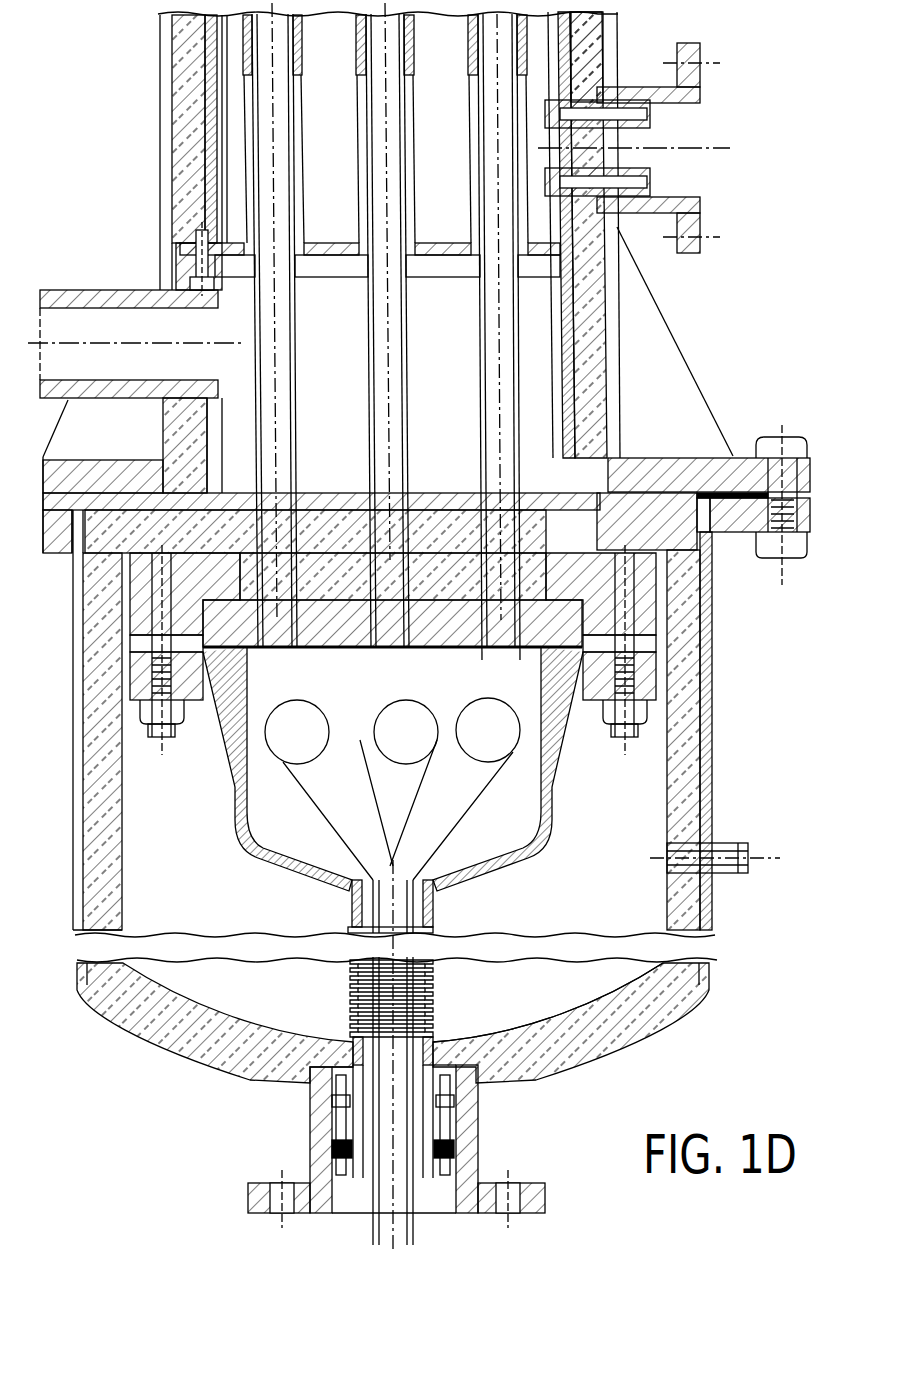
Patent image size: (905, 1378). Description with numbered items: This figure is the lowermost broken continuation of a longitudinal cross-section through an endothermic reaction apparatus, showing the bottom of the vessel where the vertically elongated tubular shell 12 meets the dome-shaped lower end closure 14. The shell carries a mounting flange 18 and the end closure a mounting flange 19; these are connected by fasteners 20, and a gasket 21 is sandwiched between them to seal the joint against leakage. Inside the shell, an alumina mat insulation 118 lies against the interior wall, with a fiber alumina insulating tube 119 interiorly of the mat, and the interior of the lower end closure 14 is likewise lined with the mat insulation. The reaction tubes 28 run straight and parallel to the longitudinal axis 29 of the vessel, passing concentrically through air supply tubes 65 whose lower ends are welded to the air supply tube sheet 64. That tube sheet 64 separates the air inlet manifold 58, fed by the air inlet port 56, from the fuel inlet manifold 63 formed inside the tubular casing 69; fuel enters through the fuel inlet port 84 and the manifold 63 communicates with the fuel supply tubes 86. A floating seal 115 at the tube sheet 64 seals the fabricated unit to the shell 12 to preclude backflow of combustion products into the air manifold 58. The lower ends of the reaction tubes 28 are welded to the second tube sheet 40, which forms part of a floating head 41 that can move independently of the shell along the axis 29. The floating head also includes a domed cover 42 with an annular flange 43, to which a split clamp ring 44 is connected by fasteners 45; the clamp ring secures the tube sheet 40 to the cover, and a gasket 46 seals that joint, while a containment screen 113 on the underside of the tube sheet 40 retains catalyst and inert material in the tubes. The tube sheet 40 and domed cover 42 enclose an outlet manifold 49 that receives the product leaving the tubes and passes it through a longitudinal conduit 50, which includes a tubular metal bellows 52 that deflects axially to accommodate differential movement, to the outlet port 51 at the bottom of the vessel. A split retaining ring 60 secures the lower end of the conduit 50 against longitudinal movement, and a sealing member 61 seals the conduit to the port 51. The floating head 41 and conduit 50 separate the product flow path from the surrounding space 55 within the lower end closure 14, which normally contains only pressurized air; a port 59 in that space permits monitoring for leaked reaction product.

The tubular shell 12 is at (158, 45).
The fiber alumina insulating tube 119 is at (210, 90).
The fuel inlet manifold 63 is at (237, 137).
The tubular drum or casing 69 is at (210, 178).
The floating seal 115 is at (195, 262).
The air inlet port 56 is at (80, 290).
The alumina mat insulation 118 is at (590, 35).
The fuel supply tubes 86 is at (420, 20).
The fuel inlet port 84 is at (760, 90).
The air supply tubes 65 is at (362, 243).
The air supply tube sheet 64 is at (333, 277).
The reaction tubes 28 is at (455, 368).
The air inlet manifold 58 is at (575, 395).
The fasteners 20 is at (770, 440).
The mounting flange 18 is at (810, 470).
The gasket 21 is at (742, 530).
The mounting flange 19 is at (812, 520).
The split clamp ring 44 is at (660, 615).
The second tube sheet 40 is at (330, 647).
The containment screen 113 is at (420, 655).
The gasket 46 is at (520, 660).
The annular flange 43 is at (705, 745).
The fasteners 45 is at (615, 737).
The port 59 is at (740, 850).
The floating head 41 is at (240, 860).
The outlet plenum or manifold 49 is at (315, 855).
The domed cover 42 is at (500, 875).
The conduit 50 is at (350, 991).
The tubular metal bellows 52 is at (433, 992).
The lower end closure 14 is at (120, 1025).
The surrounding space 55 is at (590, 990).
The split retaining ring 60 is at (345, 1110).
The gasket or sealing member 61 is at (335, 1150).
The outlet port 51 is at (478, 1120).
The longitudinal axis 29 is at (385, 1238).